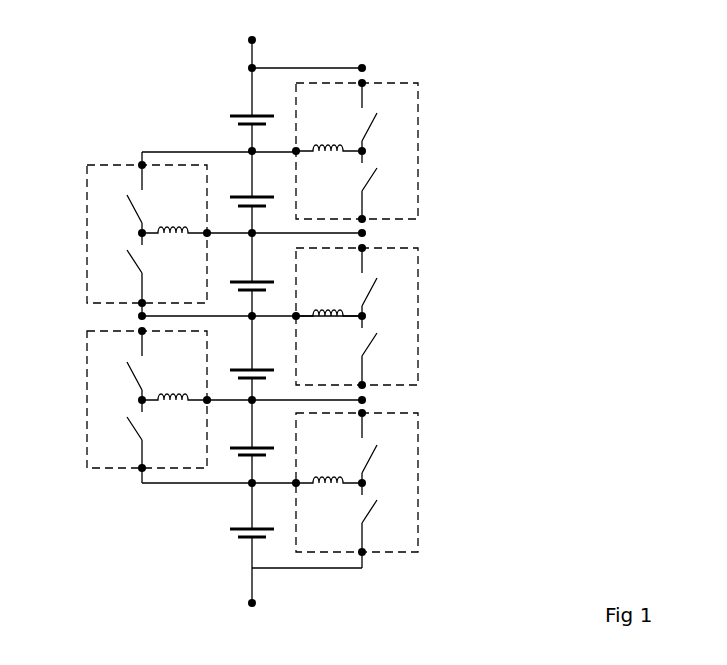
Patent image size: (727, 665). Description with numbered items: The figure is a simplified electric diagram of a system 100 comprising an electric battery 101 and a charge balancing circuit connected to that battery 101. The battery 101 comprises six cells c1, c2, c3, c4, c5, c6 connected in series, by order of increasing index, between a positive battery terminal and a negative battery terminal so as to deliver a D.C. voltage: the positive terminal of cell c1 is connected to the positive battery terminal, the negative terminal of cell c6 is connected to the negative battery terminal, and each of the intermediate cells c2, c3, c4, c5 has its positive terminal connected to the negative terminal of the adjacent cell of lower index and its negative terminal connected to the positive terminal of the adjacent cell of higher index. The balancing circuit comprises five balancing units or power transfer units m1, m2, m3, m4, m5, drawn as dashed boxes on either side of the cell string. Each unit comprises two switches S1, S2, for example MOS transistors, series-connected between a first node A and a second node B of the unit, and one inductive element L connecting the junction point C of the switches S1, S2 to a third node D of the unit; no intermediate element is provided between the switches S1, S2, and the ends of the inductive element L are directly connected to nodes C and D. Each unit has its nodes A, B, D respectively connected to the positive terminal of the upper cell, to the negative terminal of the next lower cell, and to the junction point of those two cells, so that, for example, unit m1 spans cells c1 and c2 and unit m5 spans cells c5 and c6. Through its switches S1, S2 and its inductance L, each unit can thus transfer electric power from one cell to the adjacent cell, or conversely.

The system 100 is at (540, 64).
The electric battery 101 is at (250, 67).
The cell c1 is at (248, 103).
The cell c2 is at (248, 187).
The cell c3 is at (248, 270).
The cell c4 is at (248, 356).
The cell c5 is at (248, 435).
The cell c6 is at (248, 517).
The balancing unit m1 is at (418, 121).
The balancing unit m2 is at (418, 317).
The balancing unit m3 is at (418, 483).
The balancing unit m4 is at (87, 357).
The balancing unit m5 is at (87, 190).
The switch S1 is at (252, 283).
The switch S2 is at (252, 351).
The inductive element L is at (252, 301).
The first node A is at (362, 83).
The second node B is at (366, 220).
The junction point C is at (366, 151).
The third node D is at (296, 153).